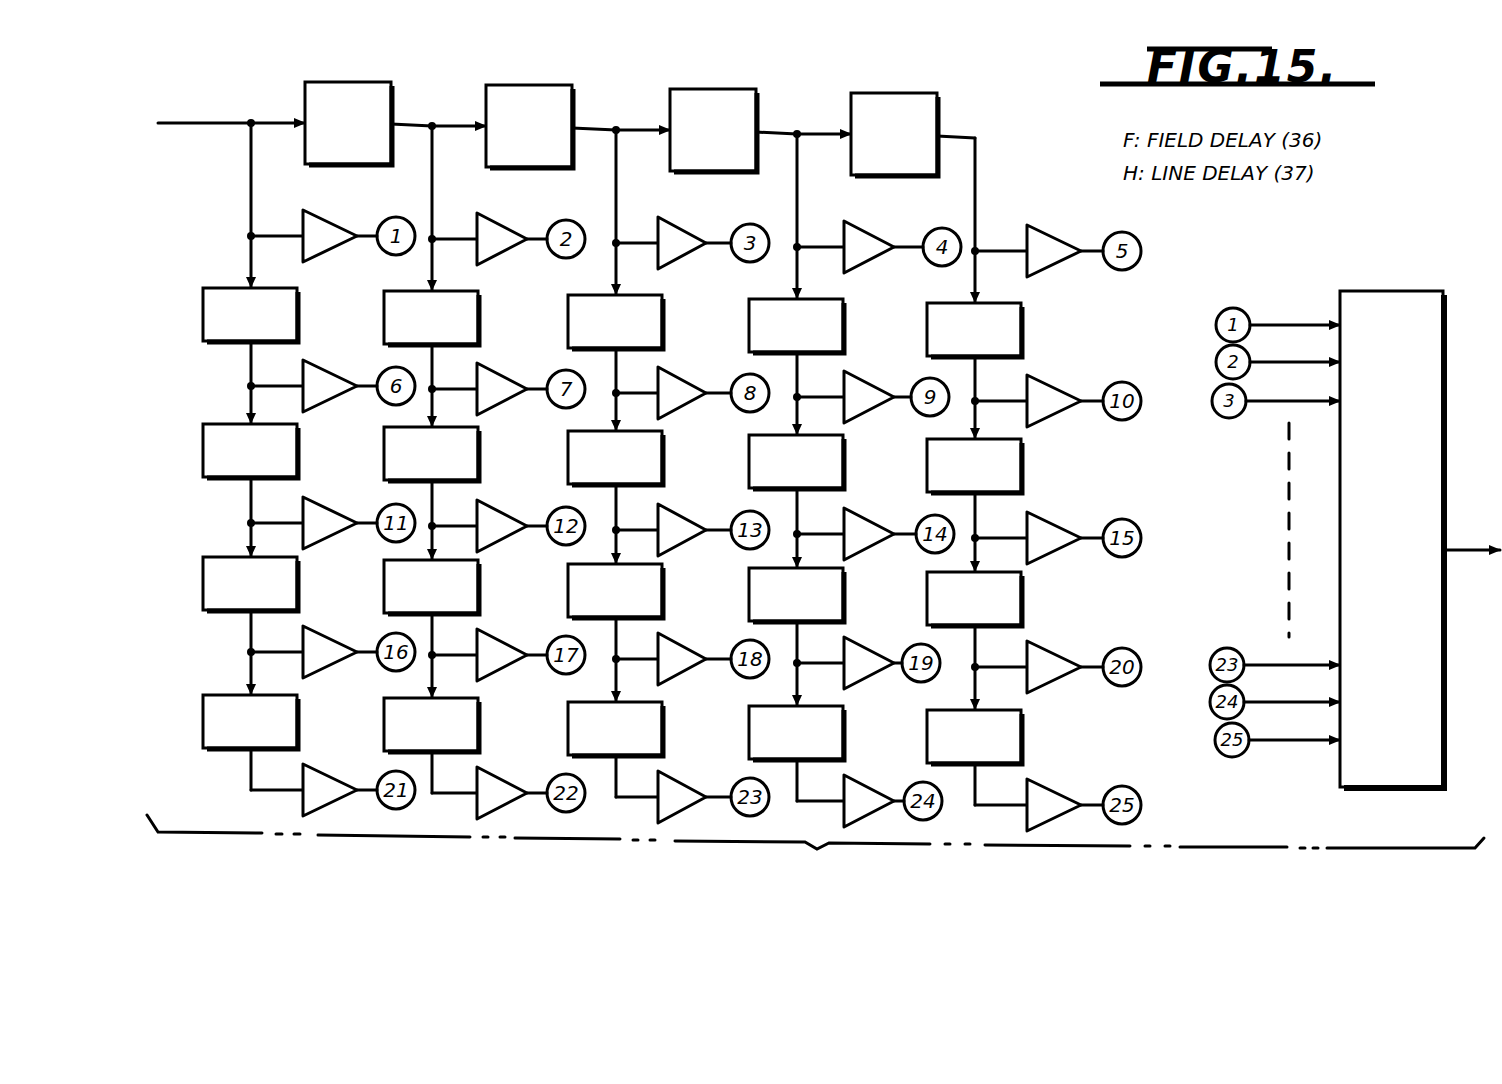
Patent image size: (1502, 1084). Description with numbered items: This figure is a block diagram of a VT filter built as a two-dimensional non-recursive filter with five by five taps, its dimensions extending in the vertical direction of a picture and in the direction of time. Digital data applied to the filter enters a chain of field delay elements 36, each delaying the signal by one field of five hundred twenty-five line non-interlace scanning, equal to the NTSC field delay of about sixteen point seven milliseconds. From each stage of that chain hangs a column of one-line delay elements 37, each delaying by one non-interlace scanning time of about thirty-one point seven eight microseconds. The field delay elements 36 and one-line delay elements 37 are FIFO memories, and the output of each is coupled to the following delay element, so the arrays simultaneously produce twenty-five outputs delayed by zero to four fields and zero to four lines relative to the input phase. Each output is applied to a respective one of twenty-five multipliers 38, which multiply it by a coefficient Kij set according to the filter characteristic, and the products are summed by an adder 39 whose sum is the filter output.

The field delay element 36 is at (621, 110).
The 1-line delay element 37 is at (617, 526).
The multiplier 38 is at (692, 507).
The adder 39 is at (1398, 638).